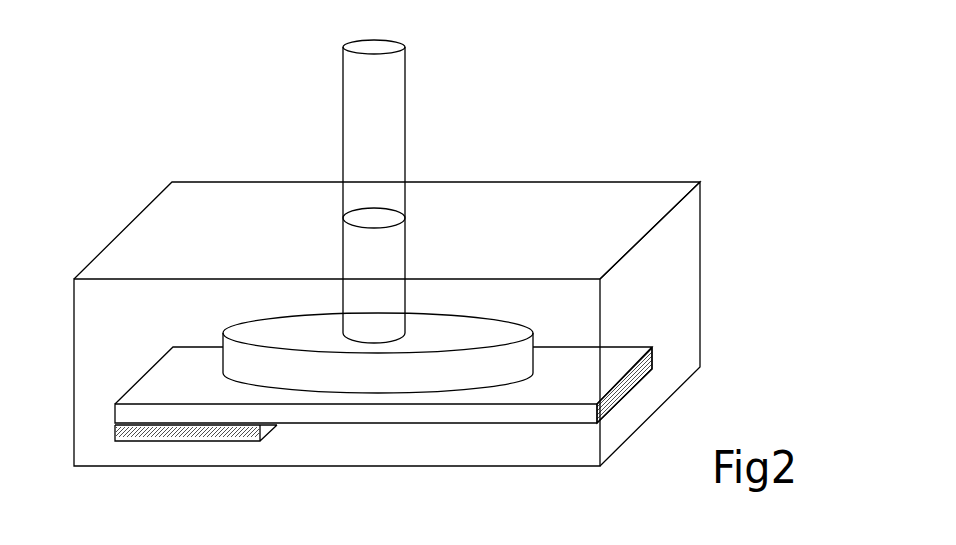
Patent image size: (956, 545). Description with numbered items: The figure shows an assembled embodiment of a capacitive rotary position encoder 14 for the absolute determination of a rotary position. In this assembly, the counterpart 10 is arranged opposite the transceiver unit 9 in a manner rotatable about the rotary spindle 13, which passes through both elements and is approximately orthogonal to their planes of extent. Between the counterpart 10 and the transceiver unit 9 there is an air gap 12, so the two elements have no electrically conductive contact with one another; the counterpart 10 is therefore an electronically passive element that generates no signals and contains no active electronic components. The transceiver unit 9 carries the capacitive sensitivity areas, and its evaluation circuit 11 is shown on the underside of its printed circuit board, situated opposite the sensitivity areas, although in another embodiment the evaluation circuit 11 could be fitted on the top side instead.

The transceiver unit 9 is at (625, 335).
The counterpart 10 is at (520, 310).
The evaluation circuit 11 is at (218, 443).
The air gap 12 is at (605, 395).
The rotary spindle 13 is at (390, 142).
The rotary position encoder 14 is at (237, 155).